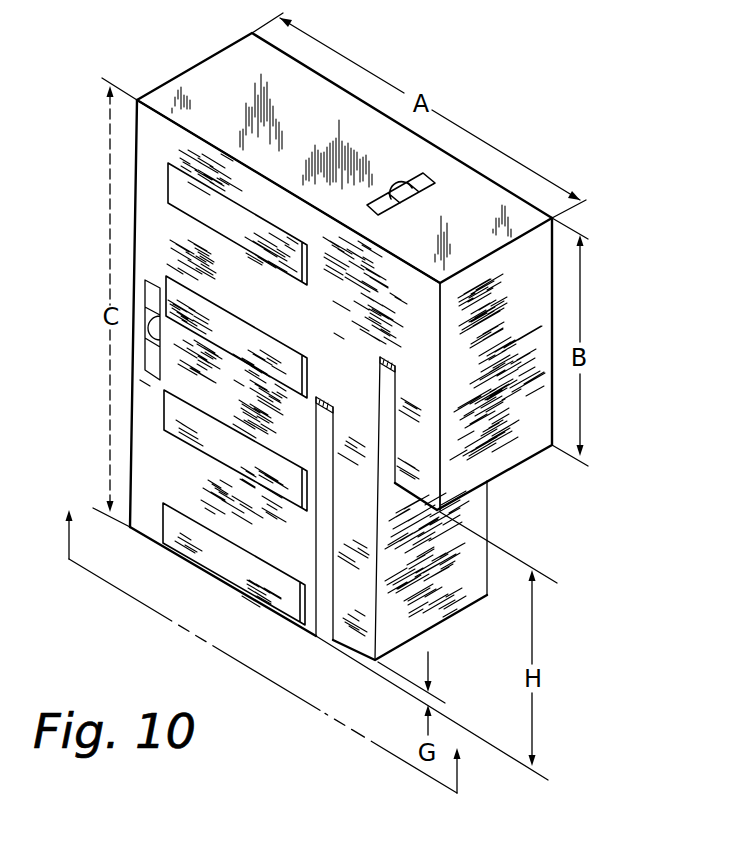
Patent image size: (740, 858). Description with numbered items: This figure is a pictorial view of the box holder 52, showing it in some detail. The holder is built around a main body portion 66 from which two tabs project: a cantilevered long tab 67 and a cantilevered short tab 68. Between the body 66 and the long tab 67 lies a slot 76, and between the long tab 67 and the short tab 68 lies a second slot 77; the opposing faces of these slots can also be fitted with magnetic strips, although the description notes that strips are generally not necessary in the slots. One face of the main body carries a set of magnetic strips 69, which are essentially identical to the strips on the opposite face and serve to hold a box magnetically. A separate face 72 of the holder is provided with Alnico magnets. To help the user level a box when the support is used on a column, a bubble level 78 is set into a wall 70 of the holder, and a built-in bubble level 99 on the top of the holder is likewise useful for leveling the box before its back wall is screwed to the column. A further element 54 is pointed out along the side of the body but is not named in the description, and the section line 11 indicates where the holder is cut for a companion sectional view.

The box holder 52 is at (134, 53).
The front wall 54 is at (133, 247).
The main body portion 66 is at (327, 374).
The cantilevered long tab 67 is at (349, 648).
The cantilevered short tab 68 is at (530, 293).
The magnetic strips 69 is at (166, 285).
The wall 70 is at (148, 386).
The face 72 is at (160, 543).
The slot 76 is at (322, 583).
The slot 77 is at (389, 418).
The bubble level 78 is at (145, 290).
The built-in bubble level 99 is at (433, 175).
The section line 11- 11 is at (262, 661).